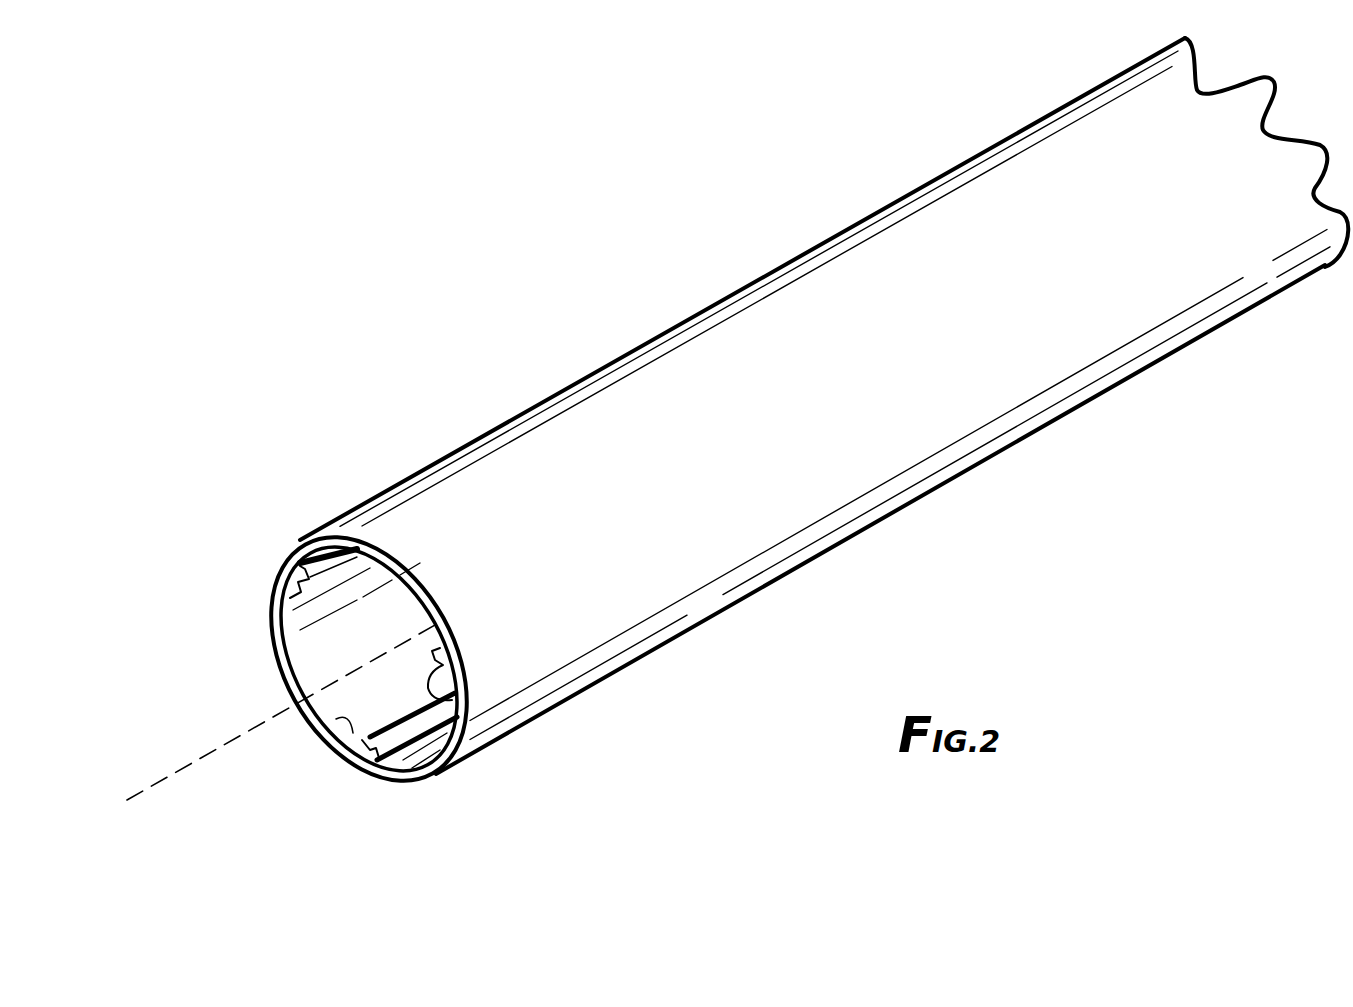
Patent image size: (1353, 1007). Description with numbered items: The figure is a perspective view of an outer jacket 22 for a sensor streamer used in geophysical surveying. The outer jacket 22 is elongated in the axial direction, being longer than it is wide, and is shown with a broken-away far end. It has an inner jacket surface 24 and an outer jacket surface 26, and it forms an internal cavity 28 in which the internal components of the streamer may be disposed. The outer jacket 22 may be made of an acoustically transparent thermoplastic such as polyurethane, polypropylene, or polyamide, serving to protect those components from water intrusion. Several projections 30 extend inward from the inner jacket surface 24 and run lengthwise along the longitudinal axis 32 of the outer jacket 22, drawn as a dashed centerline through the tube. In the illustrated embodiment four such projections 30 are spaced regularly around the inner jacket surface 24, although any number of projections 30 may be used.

The outer jacket 22 is at (613, 287).
The inner jacket surface 24 is at (330, 730).
The outer jacket surface 26 is at (857, 273).
The internal cavity 28 is at (343, 628).
The projections 30 is at (297, 602).
The longitudinal axis 32 is at (232, 740).